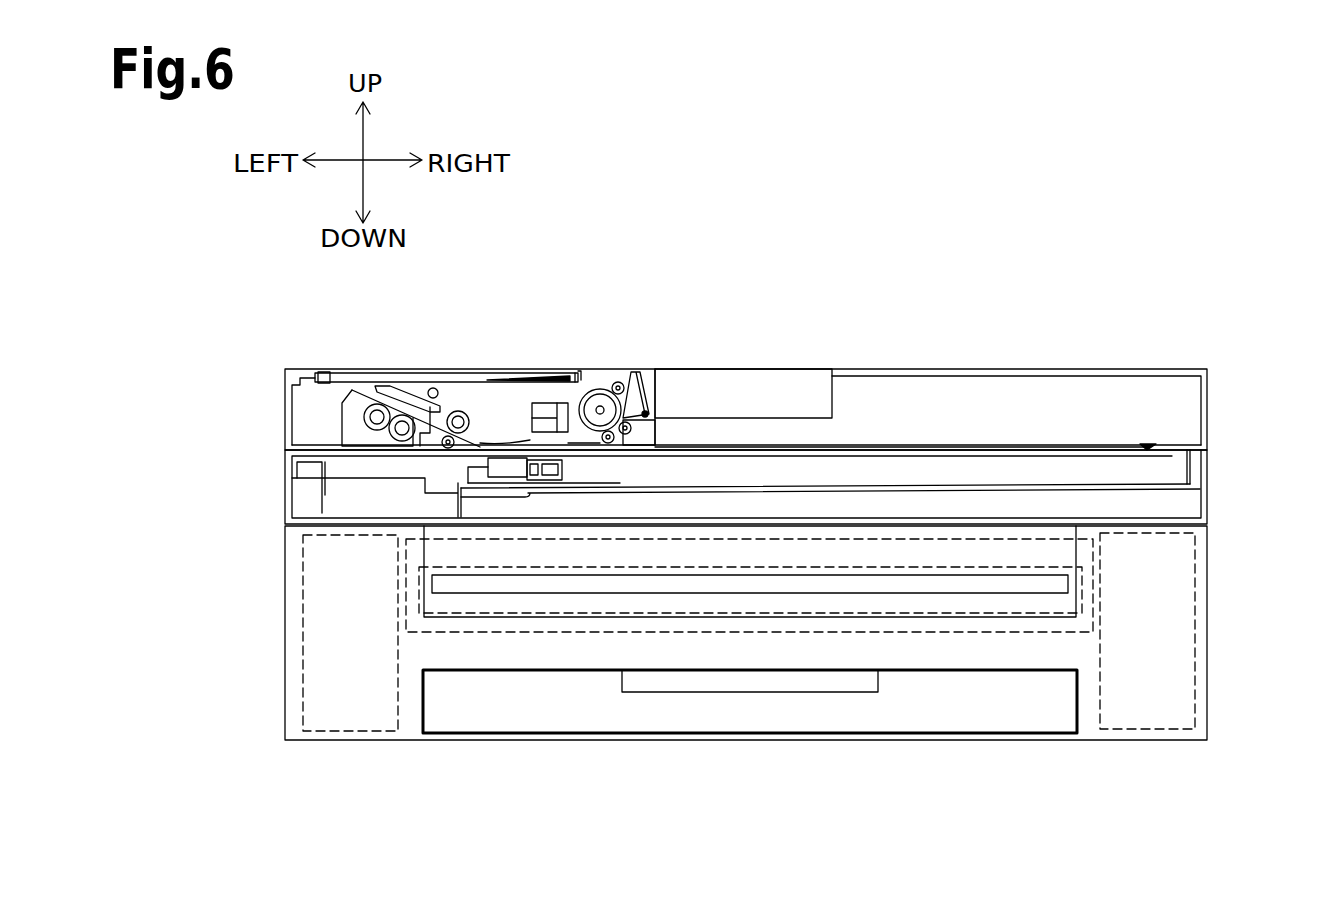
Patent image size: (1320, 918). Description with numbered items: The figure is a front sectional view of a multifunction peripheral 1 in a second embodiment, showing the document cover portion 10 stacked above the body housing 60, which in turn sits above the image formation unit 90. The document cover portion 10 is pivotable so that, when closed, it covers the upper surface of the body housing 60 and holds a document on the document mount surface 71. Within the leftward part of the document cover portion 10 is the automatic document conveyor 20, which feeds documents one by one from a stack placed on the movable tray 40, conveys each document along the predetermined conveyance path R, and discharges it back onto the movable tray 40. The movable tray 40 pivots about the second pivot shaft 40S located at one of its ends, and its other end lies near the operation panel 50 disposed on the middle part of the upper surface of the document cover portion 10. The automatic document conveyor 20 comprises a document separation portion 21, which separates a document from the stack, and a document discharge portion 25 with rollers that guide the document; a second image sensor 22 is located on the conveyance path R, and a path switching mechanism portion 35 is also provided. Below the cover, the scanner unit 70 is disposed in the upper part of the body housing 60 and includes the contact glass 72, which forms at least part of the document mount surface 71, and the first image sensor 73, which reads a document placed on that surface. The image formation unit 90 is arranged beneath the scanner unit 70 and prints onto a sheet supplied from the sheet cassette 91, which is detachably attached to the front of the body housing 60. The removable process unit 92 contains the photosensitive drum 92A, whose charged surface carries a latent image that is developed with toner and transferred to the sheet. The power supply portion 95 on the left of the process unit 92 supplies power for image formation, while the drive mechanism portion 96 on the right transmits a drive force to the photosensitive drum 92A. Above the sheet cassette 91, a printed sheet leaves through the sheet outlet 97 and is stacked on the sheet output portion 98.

The multifunction peripheral 1 is at (1206, 299).
The document cover portion 10 is at (1040, 376).
The automatic document conveyor 20 is at (507, 409).
The document separation portion 21 is at (360, 440).
The second image sensor 22 is at (553, 426).
The document discharge portion 25 is at (475, 384).
The path switching mechanism portion 35 is at (623, 418).
The movable tray 40 is at (437, 382).
The second pivot shaft 40S is at (323, 372).
The operation panel 50 is at (768, 385).
The body housing 60 is at (282, 503).
The scanner unit 70 is at (1173, 477).
The document mount surface 71 is at (940, 447).
The contact glass 72 is at (1133, 452).
The first image sensor 73 is at (480, 458).
The image formation unit 90 is at (1213, 644).
The sheet cassette 91 is at (972, 720).
The process unit 92 is at (867, 632).
The photosensitive drum 92A is at (480, 567).
The power supply portion 95 is at (302, 654).
The drive mechanism portion 96 is at (1195, 693).
The sheet outlet 97 is at (733, 583).
The sheet output portion 98 is at (598, 598).
The conveyance path R is at (583, 383).